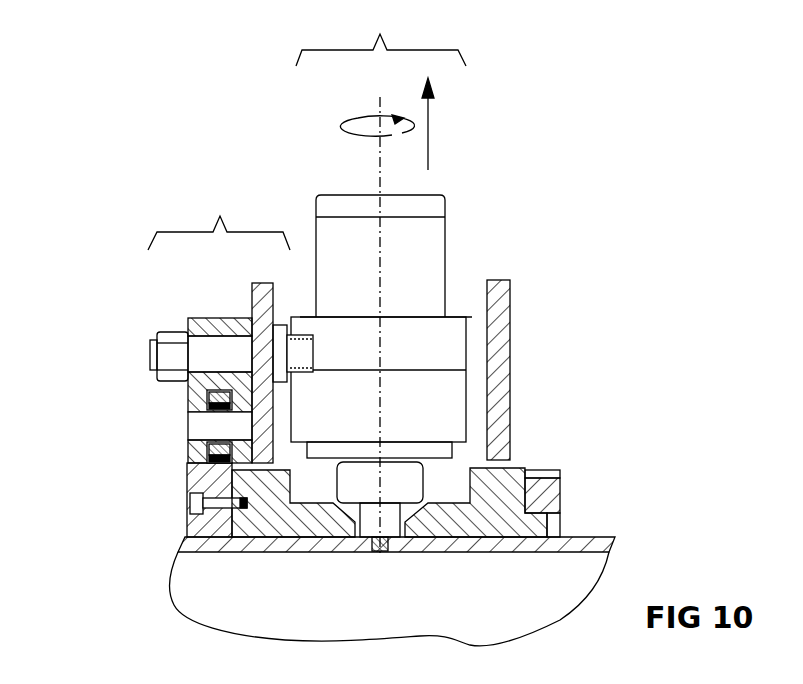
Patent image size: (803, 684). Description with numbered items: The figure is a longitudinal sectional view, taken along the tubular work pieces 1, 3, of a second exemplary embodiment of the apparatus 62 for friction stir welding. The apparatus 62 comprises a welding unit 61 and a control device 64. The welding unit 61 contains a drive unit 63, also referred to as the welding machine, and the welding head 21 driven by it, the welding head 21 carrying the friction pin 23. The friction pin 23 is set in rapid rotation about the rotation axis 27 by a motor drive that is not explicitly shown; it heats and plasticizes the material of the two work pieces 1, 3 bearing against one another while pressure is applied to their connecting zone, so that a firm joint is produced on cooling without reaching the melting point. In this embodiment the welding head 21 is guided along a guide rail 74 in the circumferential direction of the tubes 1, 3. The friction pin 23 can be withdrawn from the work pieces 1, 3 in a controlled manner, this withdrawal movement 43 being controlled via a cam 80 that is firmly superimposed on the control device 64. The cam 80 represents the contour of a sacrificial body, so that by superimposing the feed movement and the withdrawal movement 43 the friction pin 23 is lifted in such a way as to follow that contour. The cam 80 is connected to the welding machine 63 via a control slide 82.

The work piece 1 is at (598, 544).
The work piece 3 is at (389, 599).
The welding head 21 is at (393, 485).
The friction pin 23 is at (384, 554).
The rotation axis 27 is at (378, 170).
The withdrawal movement 43 is at (430, 128).
The welding unit 61 is at (394, 26).
The apparatus 62 is at (75, 222).
The drive unit 63 is at (425, 240).
The control device 64 is at (234, 207).
The guide rail 74 is at (508, 480).
The cam 80 is at (205, 432).
The control slide 82 is at (219, 320).